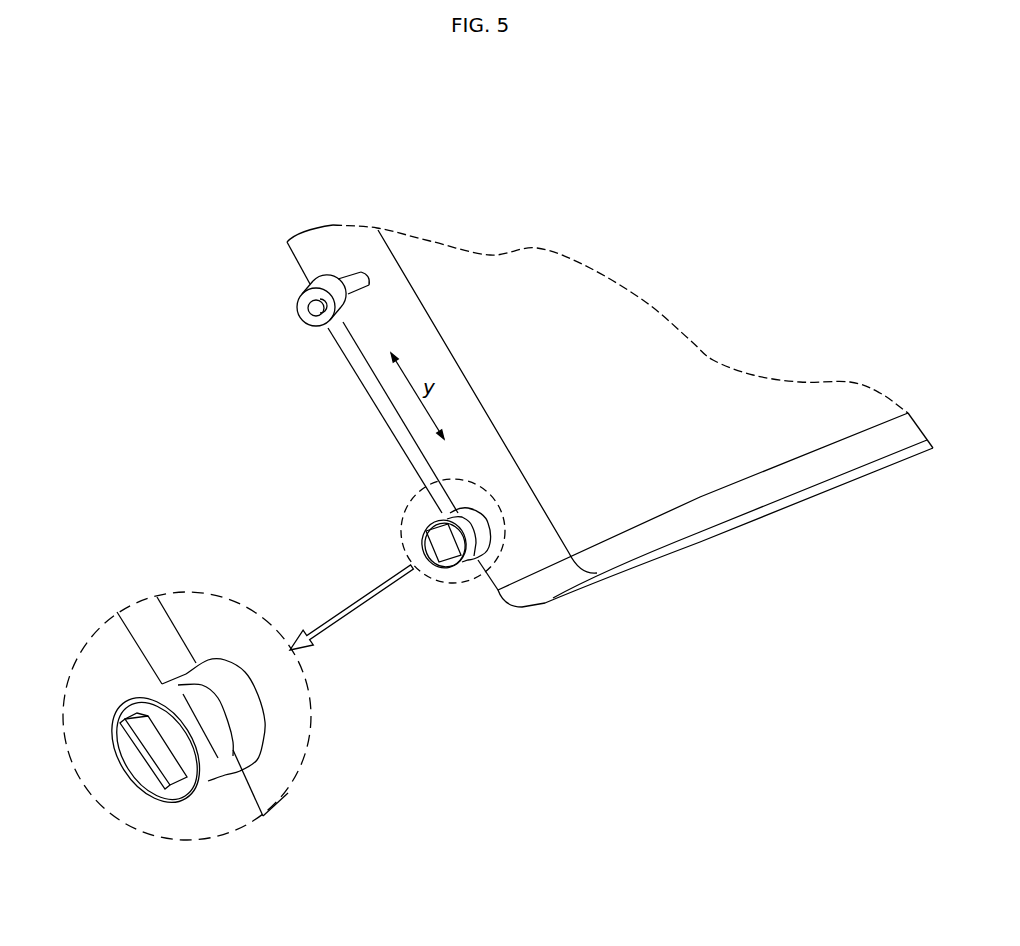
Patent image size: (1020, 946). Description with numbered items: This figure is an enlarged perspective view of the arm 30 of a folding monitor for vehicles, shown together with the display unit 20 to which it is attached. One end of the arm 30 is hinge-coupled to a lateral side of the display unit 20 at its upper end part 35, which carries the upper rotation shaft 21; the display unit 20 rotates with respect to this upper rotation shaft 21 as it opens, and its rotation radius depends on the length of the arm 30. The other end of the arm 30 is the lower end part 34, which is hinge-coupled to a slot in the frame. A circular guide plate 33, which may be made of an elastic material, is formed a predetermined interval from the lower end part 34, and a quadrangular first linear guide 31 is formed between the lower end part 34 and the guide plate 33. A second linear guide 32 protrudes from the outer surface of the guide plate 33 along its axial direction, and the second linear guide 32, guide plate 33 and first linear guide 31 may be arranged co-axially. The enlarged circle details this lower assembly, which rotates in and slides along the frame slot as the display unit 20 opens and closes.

The display unit 20 is at (590, 508).
The upper rotation shaft 21 is at (350, 283).
The arm 30 is at (372, 378).
The first linear guide 31 is at (223, 780).
The second linear guide 32 is at (153, 768).
The guide plate 33 is at (185, 787).
The lower end part 34 is at (240, 728).
The upper end part 35 is at (306, 291).